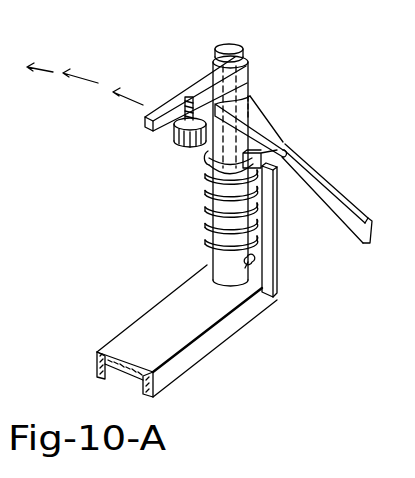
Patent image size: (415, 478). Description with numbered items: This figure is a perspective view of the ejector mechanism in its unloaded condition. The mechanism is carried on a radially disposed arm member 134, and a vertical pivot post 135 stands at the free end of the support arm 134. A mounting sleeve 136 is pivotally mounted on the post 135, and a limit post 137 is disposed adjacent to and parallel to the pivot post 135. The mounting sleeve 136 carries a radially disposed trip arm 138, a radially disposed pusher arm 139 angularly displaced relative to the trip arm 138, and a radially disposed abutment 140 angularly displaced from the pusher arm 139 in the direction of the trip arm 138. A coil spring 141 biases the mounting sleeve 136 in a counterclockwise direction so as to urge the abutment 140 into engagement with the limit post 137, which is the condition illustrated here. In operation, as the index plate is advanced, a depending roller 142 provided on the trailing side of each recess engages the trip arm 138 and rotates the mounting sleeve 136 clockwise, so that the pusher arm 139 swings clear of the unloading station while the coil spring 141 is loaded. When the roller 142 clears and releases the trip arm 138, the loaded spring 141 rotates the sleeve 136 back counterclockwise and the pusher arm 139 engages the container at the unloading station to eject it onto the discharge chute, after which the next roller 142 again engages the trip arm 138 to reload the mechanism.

The arm member 134 is at (120, 335).
The vertical pivot post 135 is at (236, 52).
The mounting sleeve 136 is at (245, 86).
The limit post 137 is at (273, 259).
The trip arm 138 is at (190, 77).
The pusher arm 139 is at (268, 127).
The abutment 140 is at (226, 176).
The coil spring 141 is at (203, 218).
The depending roller 142 is at (177, 145).